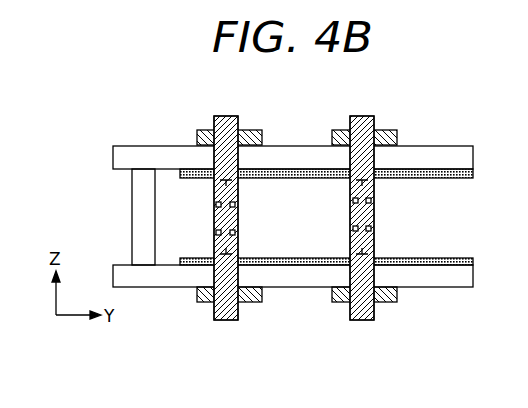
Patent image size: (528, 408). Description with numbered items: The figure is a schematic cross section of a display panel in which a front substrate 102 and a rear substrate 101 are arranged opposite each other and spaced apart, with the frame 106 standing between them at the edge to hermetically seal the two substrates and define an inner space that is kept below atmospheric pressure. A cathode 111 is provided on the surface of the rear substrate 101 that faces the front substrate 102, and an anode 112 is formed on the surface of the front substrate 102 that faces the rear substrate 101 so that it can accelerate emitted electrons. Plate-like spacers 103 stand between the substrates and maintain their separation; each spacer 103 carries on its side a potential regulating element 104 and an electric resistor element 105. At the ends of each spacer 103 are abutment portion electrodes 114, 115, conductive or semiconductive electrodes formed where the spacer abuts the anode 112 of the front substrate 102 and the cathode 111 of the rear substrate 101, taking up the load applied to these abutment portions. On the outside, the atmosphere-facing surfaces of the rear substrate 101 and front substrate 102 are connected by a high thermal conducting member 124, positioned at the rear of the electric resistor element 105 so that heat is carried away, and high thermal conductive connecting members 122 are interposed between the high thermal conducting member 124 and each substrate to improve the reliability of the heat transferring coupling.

The rear substrate 101 is at (443, 287).
The front substrate 102 is at (130, 153).
The spacer 103 is at (371, 200).
The potential regulating element 104 is at (353, 228).
The electric resistor element 105 is at (235, 205).
The frame 106 is at (133, 212).
The cathode 111 is at (461, 258).
The anode 112 is at (438, 168).
The abutment portion electrode 114 is at (218, 253).
The abutment portion electrode 115 is at (213, 160).
The high thermal conductive connecting member 122 is at (252, 129).
The high thermal conducting member 124 is at (365, 115).